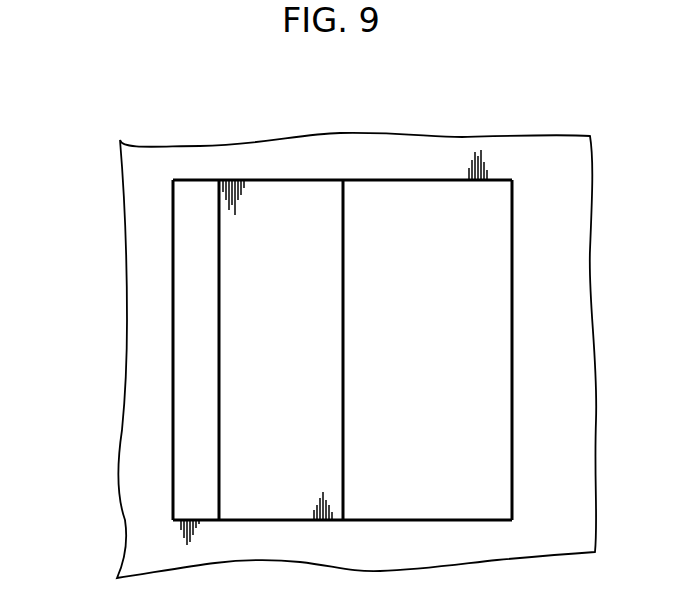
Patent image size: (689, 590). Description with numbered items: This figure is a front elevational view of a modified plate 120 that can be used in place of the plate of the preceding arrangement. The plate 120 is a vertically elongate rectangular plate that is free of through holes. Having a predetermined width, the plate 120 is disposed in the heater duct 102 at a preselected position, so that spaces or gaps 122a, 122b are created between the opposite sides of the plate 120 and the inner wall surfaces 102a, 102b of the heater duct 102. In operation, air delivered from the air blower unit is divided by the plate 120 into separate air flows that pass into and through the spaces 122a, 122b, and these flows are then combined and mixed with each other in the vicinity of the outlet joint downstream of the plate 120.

The heater duct 102 is at (460, 134).
The inner wall surface of the heater duct 102a is at (512, 310).
The inner wall surface of the heater duct 102b is at (175, 309).
The modified plate 120 is at (327, 293).
The space 122a is at (460, 380).
The space 122b is at (203, 286).